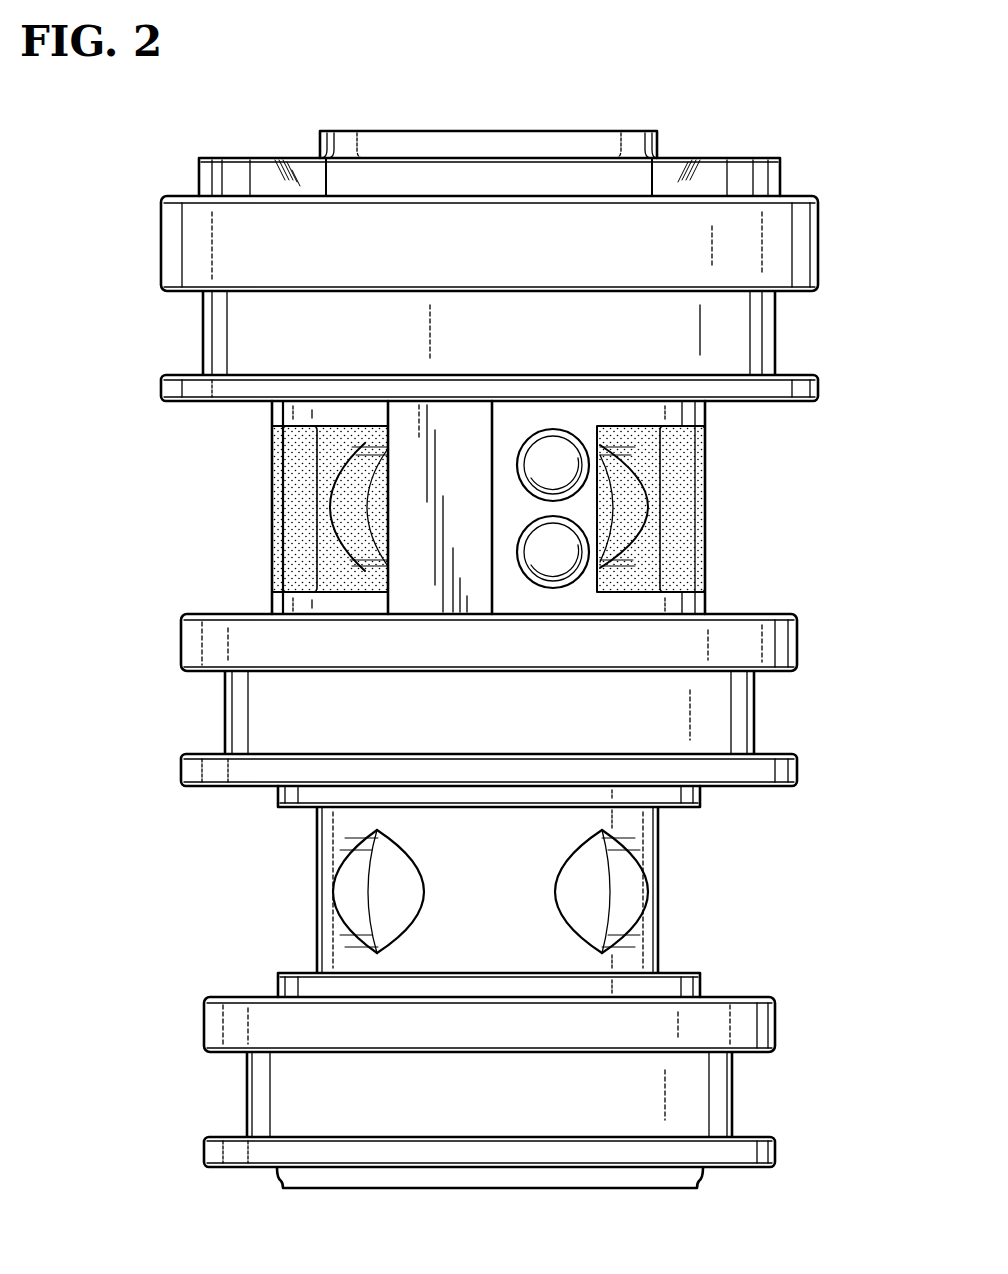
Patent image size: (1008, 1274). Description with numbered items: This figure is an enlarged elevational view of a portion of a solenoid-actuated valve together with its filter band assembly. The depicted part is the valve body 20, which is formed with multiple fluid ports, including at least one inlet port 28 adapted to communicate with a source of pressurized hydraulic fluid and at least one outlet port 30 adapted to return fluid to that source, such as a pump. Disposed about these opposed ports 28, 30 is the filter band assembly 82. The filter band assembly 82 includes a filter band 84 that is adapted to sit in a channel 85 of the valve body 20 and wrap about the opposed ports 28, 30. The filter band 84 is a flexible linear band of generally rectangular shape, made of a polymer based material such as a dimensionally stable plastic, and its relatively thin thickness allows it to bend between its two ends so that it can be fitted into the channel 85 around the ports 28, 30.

The valve body 20 is at (798, 243).
The inlet port 28 is at (347, 505).
The outlet port 30 is at (494, 689).
The filter band assembly 82 is at (708, 590).
The filter band 84 is at (698, 415).
The channel 85 is at (802, 415).